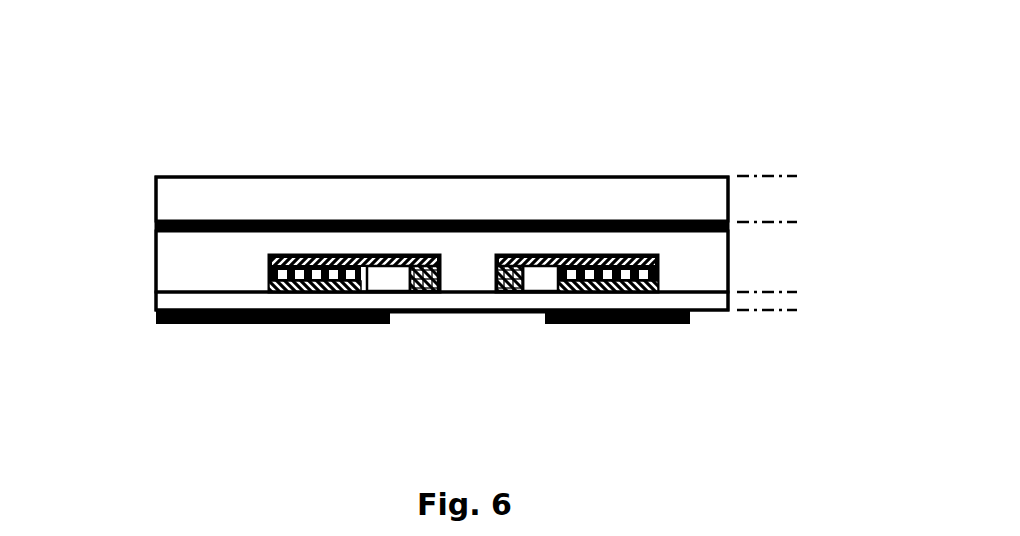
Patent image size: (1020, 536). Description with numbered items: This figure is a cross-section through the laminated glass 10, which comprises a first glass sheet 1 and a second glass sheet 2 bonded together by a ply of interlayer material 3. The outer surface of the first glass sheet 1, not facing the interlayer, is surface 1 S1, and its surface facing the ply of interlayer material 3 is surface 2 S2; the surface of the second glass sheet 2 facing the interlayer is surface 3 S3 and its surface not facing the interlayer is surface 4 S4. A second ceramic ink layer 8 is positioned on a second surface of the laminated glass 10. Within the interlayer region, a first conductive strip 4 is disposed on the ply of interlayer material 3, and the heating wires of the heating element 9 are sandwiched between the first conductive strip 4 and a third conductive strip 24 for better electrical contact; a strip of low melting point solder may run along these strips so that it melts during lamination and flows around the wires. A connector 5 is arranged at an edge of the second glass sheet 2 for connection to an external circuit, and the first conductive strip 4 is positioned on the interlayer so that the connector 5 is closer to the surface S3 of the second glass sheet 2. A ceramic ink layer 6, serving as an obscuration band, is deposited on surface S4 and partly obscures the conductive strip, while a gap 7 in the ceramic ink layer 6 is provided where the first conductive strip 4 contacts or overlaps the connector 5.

The laminated glass 10 is at (153, 73).
The first glass sheet 1 is at (157, 205).
The second glass sheet 2 is at (157, 303).
The ply of interlayer material 3 is at (157, 258).
The first conductive strip 4 is at (389, 254).
The connector 5 is at (494, 277).
The ceramic ink layer 6 is at (313, 325).
The gap 7 is at (388, 338).
The second ceramic ink layer 8 is at (591, 219).
The heating element 9 is at (268, 272).
The third conductive strip 24 is at (268, 285).
The surface 1 S1 is at (785, 175).
The surface 2 S2 is at (785, 222).
The surface 3 S3 is at (787, 290).
The surface 4 S4 is at (787, 311).